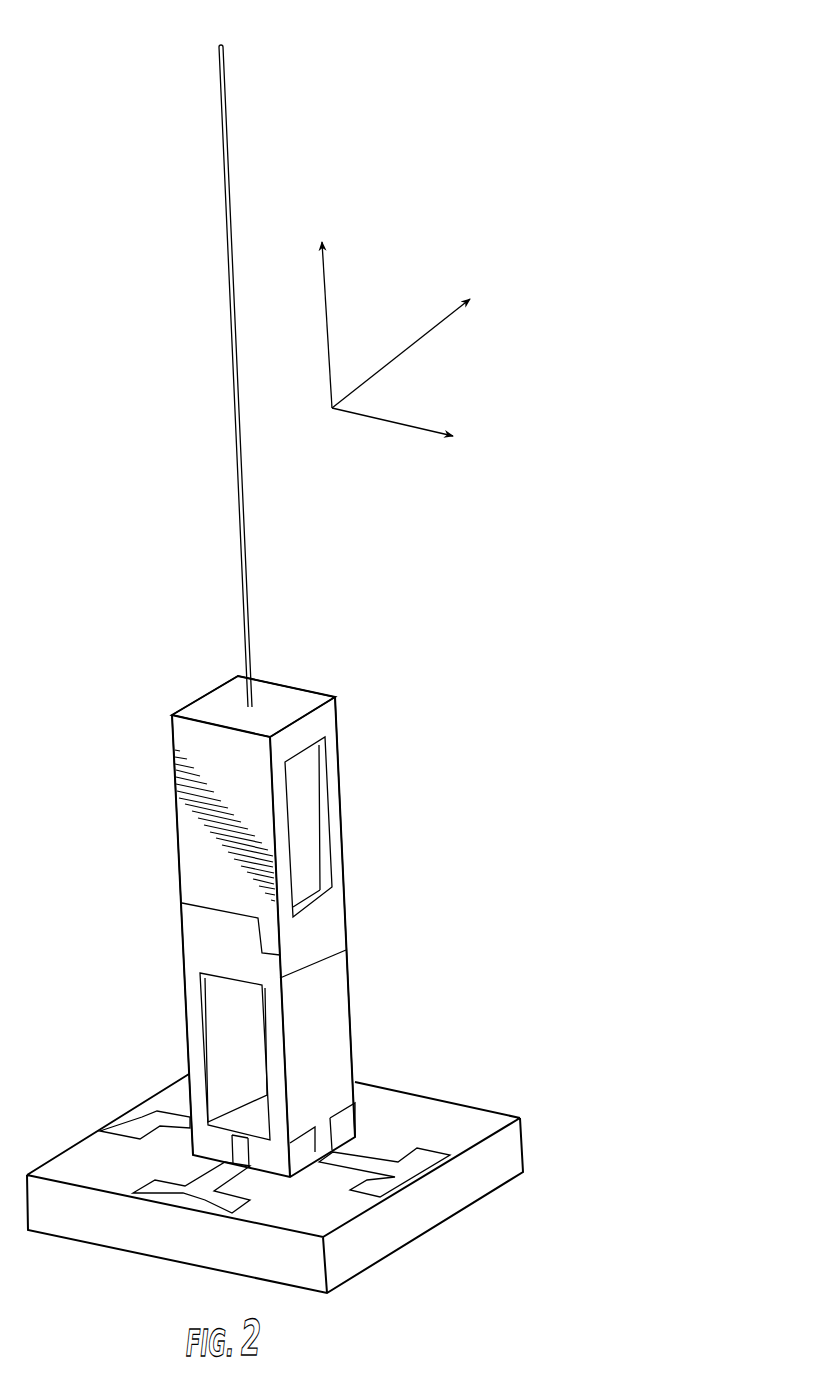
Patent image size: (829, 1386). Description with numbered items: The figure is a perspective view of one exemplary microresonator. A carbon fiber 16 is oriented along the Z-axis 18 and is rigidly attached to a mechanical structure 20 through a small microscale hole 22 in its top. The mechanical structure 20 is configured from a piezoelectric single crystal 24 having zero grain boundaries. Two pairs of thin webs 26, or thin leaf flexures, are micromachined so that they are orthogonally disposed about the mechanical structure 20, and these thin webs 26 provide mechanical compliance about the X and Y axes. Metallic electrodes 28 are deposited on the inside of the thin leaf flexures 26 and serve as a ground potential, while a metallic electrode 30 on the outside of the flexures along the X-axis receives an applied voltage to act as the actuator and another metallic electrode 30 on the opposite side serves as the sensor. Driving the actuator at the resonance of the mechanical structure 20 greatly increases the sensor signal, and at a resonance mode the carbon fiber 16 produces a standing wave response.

The carbon fiber 16 is at (217, 43).
The Z-axis 18 is at (350, 94).
The mechanical structure 20 is at (307, 892).
The microscale hole 22 is at (269, 697).
The piezoelectric single crystal 24 is at (263, 926).
The thin webs 26 is at (346, 782).
The metallic electrodes 28 is at (307, 859).
The metallic electrode 30 is at (172, 842).